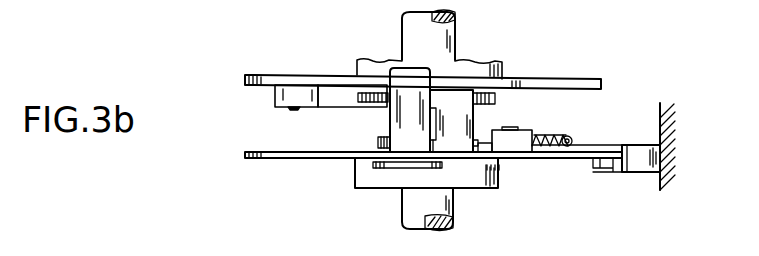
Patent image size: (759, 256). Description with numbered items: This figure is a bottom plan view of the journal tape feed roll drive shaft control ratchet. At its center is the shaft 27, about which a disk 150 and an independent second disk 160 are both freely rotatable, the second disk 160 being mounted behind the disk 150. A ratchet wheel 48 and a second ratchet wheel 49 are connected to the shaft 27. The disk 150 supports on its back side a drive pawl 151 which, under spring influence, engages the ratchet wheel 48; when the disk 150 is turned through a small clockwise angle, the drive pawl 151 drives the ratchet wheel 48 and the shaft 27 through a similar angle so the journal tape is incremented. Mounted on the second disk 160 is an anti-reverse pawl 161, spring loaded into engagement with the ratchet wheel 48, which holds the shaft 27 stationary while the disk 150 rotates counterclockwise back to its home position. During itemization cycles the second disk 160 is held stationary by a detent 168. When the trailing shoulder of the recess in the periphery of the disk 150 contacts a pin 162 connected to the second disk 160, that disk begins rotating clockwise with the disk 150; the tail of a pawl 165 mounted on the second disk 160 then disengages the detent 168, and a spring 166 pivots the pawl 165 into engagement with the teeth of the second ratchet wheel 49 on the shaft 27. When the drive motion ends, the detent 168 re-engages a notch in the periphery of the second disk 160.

The shaft 27 is at (456, 15).
The ratchet wheel 48 is at (496, 98).
The second ratchet wheel 49 is at (378, 142).
The disk 150 is at (570, 79).
The drive pawl 151 is at (277, 89).
The second disk 160 is at (318, 160).
The anti-reverse pawl 161 is at (463, 111).
The pin 162 is at (390, 120).
The pawl 165 is at (550, 153).
The spring 166 is at (572, 138).
The detent 168 is at (613, 173).